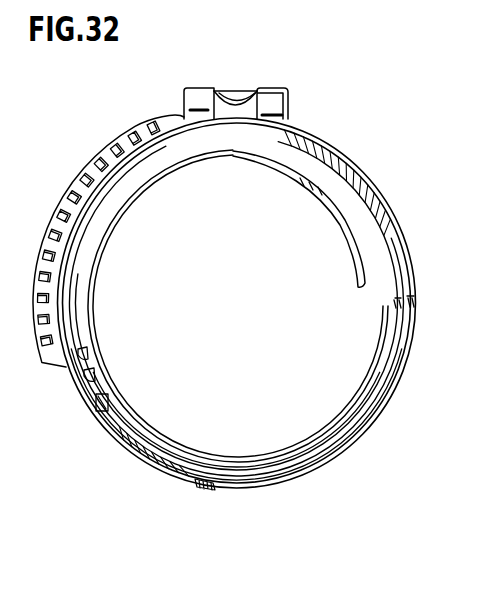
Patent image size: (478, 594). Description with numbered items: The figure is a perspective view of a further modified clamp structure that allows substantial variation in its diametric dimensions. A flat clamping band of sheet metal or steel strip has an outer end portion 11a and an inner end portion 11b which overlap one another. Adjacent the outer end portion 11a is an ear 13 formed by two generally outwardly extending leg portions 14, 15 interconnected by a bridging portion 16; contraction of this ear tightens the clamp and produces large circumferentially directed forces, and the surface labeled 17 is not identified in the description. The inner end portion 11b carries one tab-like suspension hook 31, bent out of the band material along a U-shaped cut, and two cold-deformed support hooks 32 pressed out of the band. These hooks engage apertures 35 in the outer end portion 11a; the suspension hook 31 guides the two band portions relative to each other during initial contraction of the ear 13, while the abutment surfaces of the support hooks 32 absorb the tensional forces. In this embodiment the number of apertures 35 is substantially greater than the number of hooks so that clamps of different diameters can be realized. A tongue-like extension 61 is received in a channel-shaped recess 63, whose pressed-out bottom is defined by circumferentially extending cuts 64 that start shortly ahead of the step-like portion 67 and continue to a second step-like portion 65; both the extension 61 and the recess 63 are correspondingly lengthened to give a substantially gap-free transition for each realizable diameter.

The outer end portion 11a is at (123, 141).
The inner end portion 11b is at (205, 154).
The ear 13 is at (286, 86).
The leg portion 14 is at (192, 100).
The leg portion 15 is at (289, 105).
The bridging portion 16 is at (226, 88).
The bridge dome surface 17 is at (236, 96).
The suspension hook 31 is at (102, 405).
The cold-deformed support hook 32 is at (97, 378).
The aperture 35 is at (50, 279).
The tongue-like extension 61 is at (357, 273).
The channel-shaped recess 63 is at (378, 385).
The circumferentially extending cut 64 is at (392, 344).
The second step-like portion 65 is at (207, 489).
The step-like portion 67 is at (412, 305).